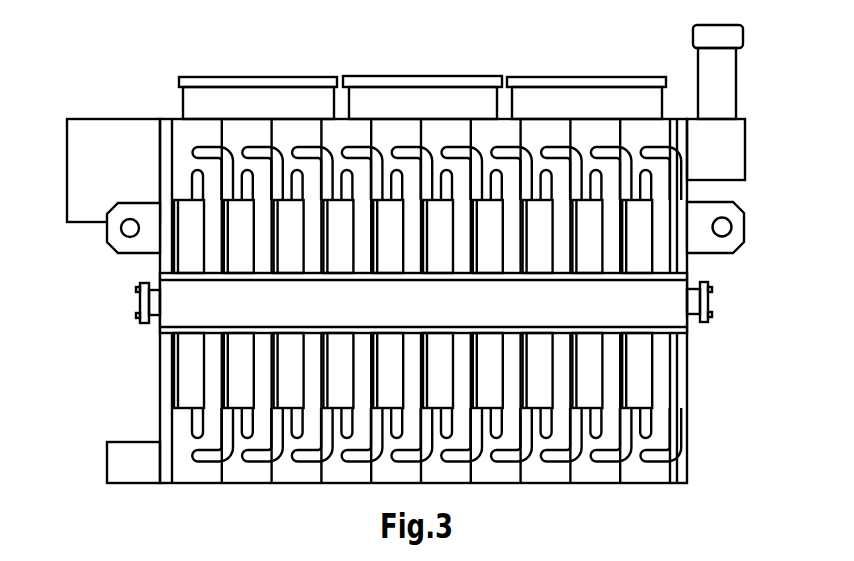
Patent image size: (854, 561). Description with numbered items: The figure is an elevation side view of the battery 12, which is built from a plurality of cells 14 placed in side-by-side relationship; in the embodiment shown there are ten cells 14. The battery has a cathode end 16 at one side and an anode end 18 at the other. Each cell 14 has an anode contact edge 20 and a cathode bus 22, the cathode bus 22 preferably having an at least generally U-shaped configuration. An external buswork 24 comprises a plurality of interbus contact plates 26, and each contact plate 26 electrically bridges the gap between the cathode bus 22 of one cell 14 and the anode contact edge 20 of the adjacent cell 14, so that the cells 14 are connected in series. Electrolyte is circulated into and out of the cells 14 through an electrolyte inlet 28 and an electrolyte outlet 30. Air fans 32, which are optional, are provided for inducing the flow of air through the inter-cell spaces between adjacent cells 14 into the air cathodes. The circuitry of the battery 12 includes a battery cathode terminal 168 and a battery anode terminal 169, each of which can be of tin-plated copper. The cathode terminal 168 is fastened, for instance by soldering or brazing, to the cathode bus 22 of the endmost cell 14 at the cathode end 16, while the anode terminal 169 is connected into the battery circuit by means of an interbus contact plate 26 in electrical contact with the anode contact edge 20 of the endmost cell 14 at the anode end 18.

The battery 12 is at (318, 51).
The cells 14 is at (400, 128).
The cathode end 16 is at (731, 280).
The anode end 18 is at (108, 350).
The anode contact edge 20 is at (198, 428).
The cathode bus 22 is at (277, 453).
The external buswork 24 is at (650, 307).
The interbus contact plates 26 is at (183, 373).
The electrolyte inlet 28 is at (132, 473).
The electrolyte outlet 30 is at (105, 138).
The air fans 32 is at (568, 78).
The battery cathode terminal 168 is at (735, 213).
The battery anode terminal 169 is at (125, 244).